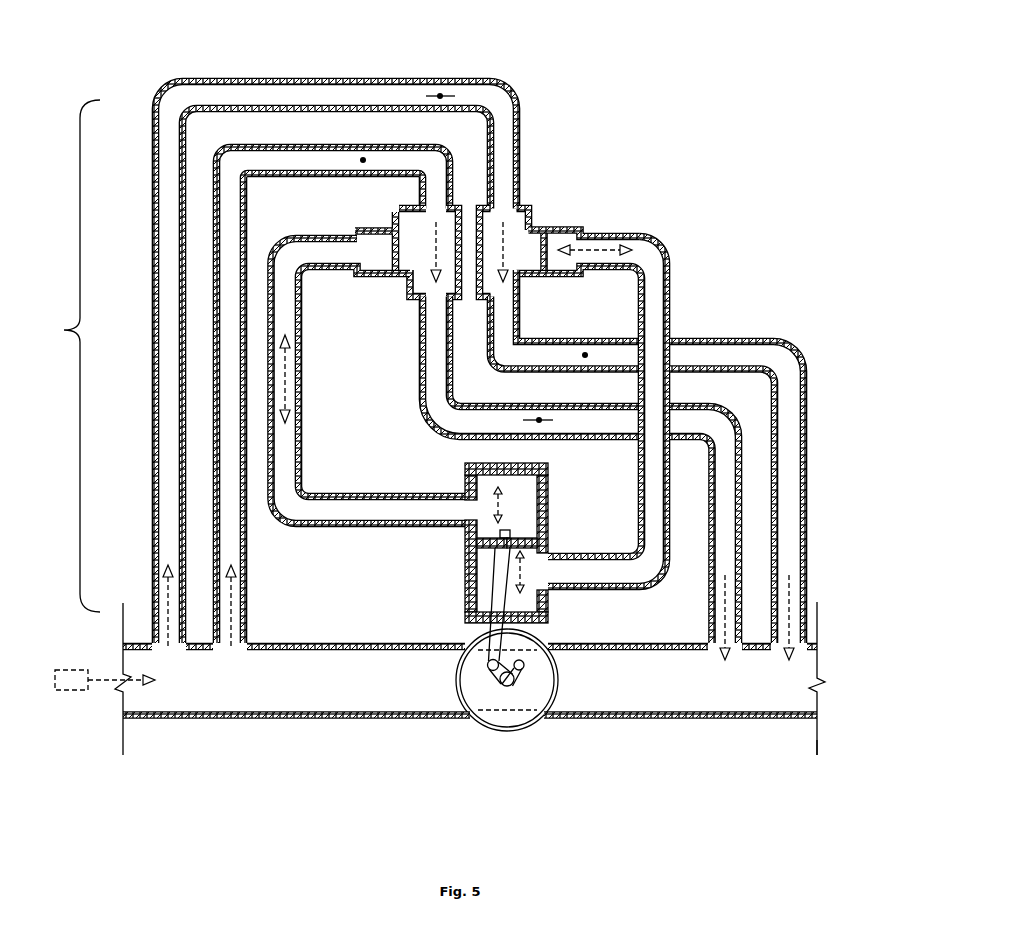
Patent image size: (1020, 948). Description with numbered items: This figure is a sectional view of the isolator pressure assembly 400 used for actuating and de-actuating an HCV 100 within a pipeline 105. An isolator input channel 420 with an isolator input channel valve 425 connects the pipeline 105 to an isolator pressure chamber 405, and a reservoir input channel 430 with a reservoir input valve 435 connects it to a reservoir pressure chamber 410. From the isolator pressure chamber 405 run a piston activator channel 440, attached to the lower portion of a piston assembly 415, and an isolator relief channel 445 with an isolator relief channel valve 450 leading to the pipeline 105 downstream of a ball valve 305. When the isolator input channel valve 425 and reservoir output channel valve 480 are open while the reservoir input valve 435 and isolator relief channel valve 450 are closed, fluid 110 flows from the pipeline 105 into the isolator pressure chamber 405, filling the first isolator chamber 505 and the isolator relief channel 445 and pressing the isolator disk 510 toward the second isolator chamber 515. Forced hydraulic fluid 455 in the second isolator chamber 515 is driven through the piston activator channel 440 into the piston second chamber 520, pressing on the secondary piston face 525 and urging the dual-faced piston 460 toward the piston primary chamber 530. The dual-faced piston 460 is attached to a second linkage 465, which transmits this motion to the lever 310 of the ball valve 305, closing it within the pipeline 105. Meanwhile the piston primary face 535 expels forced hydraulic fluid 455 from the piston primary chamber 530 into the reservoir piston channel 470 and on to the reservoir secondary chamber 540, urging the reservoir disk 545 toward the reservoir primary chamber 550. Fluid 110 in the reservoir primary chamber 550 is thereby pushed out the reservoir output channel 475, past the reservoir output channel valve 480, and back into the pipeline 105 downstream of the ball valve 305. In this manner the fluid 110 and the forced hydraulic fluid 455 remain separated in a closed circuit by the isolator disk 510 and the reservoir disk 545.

The HCV 100 is at (846, 762).
The pipeline 105 is at (470, 685).
The fluid 110 is at (478, 408).
The ball valve 305 is at (491, 698).
The lever 310 is at (434, 714).
The isolator pressure assembly 400 is at (66, 356).
The isolator pressure chamber 405 is at (545, 223).
The reservoir pressure chamber 410 is at (403, 267).
The piston assembly 415 is at (546, 558).
The isolator input channel 420 is at (330, 346).
The isolator input channel valve 425 is at (424, 74).
The reservoir input channel 430 is at (273, 396).
The reservoir input valve 435 is at (322, 106).
The piston activator channel 440 is at (647, 412).
The isolator relief channel 445 is at (687, 470).
The isolator relief channel valve 450 is at (578, 314).
The forced hydraulic fluid 455 is at (456, 419).
The dual-faced piston 460 is at (564, 531).
The linkage-2 465 is at (450, 604).
The reservoir piston channel 470 is at (368, 495).
The reservoir output channel 475 is at (616, 470).
The reservoir output channel valve 480 is at (572, 440).
The first isolator chamber 505 is at (551, 231).
The isolator disk 510 is at (583, 228).
The second isolator chamber 515 is at (590, 242).
The piston second chamber 520 is at (546, 616).
The secondary piston face 525 is at (448, 561).
The piston primary chamber 530 is at (543, 482).
The piston primary face 535 is at (450, 503).
The reservoir secondary chamber 540 is at (335, 345).
The reservoir disk 545 is at (353, 255).
The reservoir primary chamber 550 is at (375, 207).